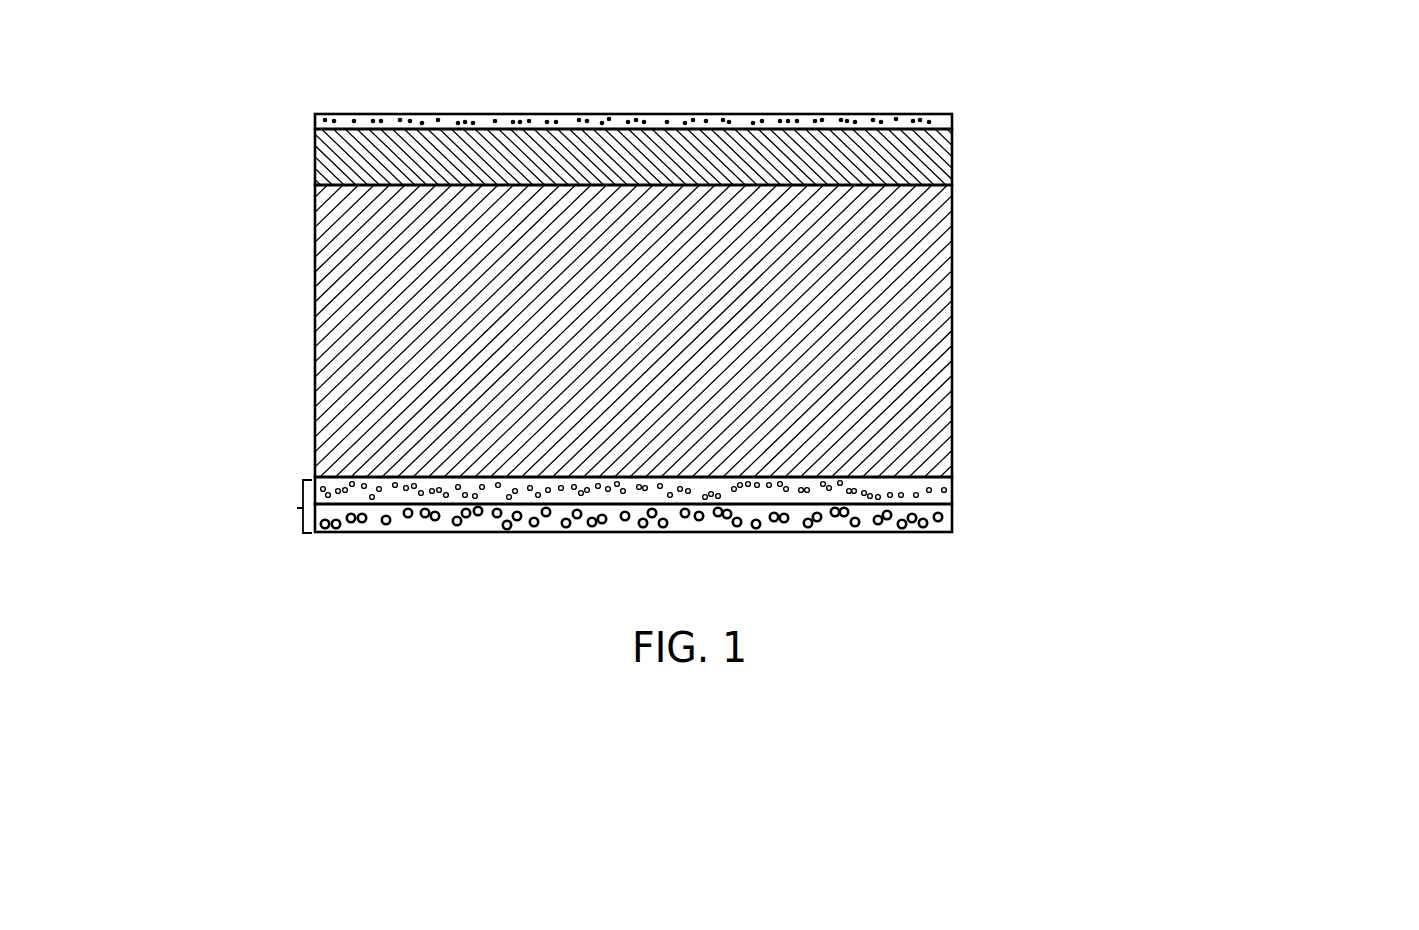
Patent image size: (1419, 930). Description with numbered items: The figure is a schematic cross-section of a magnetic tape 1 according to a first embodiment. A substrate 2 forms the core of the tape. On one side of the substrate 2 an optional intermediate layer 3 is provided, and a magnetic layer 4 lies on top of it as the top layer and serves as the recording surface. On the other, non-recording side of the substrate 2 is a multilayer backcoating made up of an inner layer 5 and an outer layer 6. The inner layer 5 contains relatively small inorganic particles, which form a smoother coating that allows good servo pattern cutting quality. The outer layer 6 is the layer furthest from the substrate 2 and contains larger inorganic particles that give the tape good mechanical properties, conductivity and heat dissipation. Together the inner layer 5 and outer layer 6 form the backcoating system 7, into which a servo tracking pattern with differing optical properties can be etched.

The magnetic tape 1 is at (942, 54).
The substrate 2 is at (946, 310).
The intermediate layer 3 is at (945, 157).
The magnetic layer 4 is at (952, 122).
The inner layer 5 is at (952, 493).
The outer layer 6 is at (945, 522).
The backcoating system 7 is at (297, 508).